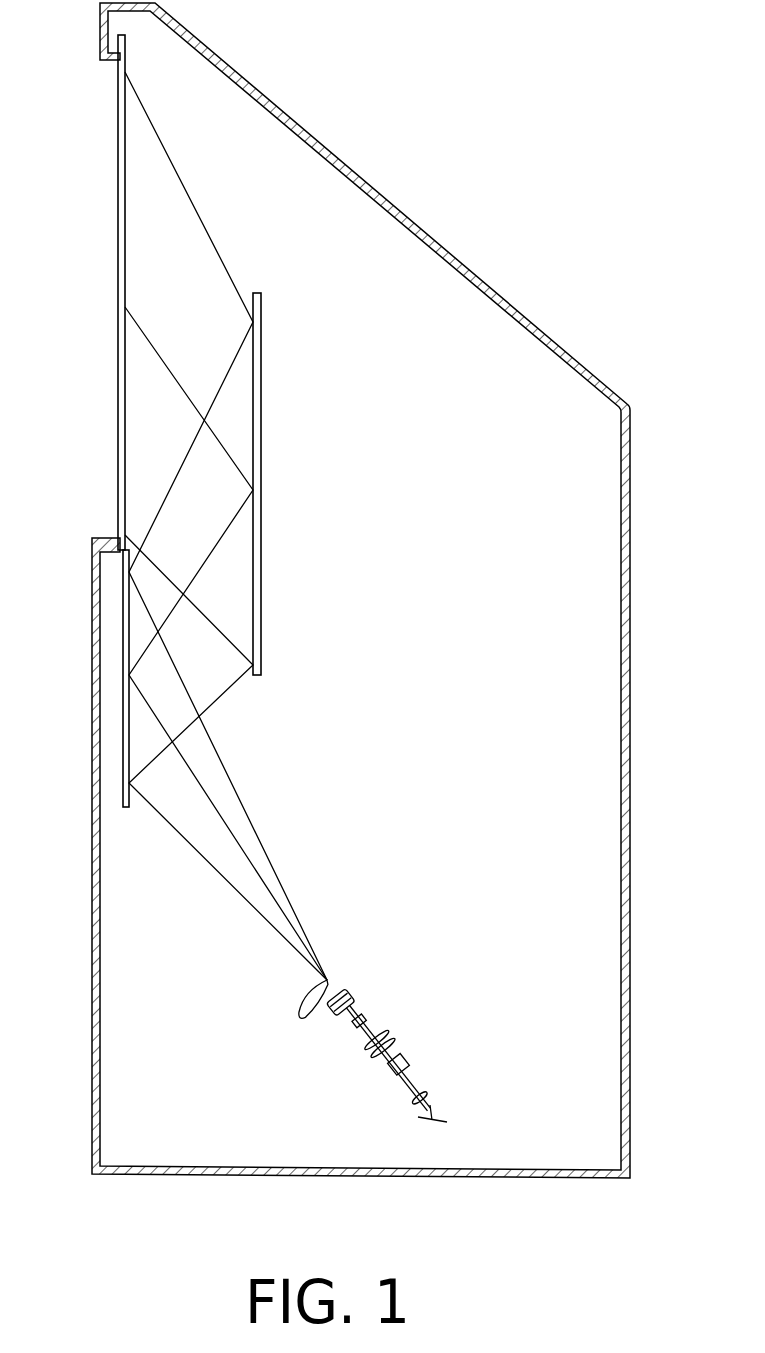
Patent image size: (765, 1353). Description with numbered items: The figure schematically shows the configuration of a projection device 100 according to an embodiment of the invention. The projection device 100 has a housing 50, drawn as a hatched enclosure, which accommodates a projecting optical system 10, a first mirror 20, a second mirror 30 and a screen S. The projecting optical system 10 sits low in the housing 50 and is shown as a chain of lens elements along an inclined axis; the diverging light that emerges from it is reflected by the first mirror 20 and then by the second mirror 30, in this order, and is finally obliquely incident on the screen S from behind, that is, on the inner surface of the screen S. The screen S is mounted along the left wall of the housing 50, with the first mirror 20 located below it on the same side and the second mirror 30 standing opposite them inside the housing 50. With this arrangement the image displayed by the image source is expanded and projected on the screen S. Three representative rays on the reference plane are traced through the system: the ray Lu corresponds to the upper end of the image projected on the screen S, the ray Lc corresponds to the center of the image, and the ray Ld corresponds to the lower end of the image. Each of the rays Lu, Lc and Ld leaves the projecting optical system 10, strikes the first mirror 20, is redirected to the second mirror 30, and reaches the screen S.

The projection device 100 is at (340, 590).
The housing 50 is at (452, 262).
The screen S is at (118, 157).
The first mirror 20 is at (128, 808).
The second mirror 30 is at (330, 425).
The projecting optical system 10 is at (478, 1098).
The ray Lu is at (195, 212).
The ray Lc is at (160, 352).
The ray Ld is at (155, 558).